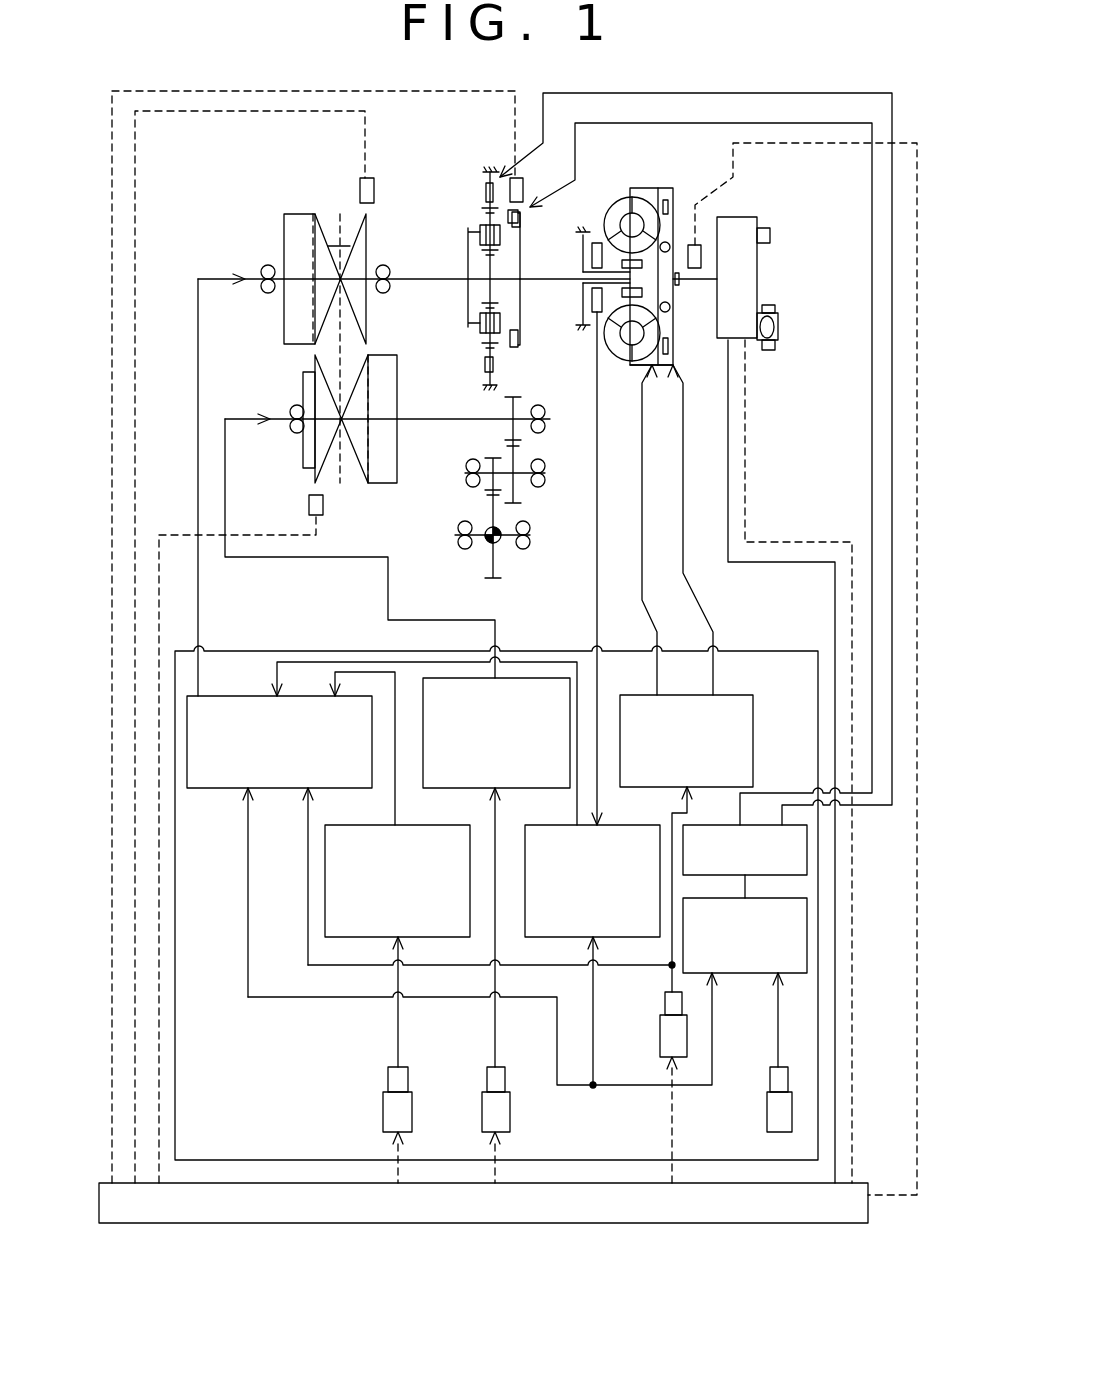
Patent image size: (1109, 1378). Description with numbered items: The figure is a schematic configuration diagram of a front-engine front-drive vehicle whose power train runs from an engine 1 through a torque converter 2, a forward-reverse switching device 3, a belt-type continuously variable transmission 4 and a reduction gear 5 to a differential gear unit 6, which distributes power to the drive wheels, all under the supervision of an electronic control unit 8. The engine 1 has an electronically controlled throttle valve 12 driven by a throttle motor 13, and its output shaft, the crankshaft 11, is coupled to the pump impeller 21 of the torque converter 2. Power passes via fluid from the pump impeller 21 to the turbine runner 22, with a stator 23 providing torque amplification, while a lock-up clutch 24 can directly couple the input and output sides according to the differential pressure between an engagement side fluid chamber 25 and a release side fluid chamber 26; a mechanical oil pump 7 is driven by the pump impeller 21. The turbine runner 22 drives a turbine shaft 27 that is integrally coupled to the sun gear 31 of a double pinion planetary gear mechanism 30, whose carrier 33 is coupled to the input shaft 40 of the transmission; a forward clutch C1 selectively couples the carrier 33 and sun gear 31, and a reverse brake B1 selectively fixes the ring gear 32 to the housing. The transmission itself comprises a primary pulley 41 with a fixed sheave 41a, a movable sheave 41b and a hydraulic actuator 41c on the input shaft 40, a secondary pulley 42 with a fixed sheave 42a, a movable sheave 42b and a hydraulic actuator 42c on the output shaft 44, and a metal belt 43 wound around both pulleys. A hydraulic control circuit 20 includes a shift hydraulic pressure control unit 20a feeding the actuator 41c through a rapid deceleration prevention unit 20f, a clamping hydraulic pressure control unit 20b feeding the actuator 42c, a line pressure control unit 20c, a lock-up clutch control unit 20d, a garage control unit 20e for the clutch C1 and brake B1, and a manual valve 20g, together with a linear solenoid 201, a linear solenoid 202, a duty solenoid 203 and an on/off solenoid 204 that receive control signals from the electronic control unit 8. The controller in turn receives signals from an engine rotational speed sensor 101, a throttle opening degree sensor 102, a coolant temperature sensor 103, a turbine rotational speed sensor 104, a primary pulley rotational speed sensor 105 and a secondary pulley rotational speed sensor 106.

The engine 1 is at (752, 215).
The torque converter 2 is at (633, 195).
The forward-reverse switching device 3 is at (492, 168).
The belt-type continuously variable transmission 4 is at (330, 190).
The reduction gear 5 is at (540, 455).
The differential gear unit 6 is at (488, 545).
The mechanical oil pump 7 is at (592, 300).
The electronic control unit 8 is at (700, 1223).
The crankshaft 11 is at (695, 280).
The throttle valve 12 is at (778, 327).
The throttle motor 13 is at (773, 313).
The hydraulic control circuit 20 is at (582, 651).
The shift hydraulic pressure control unit 20a is at (415, 825).
The clamping hydraulic pressure control unit 20b is at (522, 678).
The line pressure control unit 20c is at (620, 825).
The lock-up clutch control unit 20d is at (733, 695).
The garage control unit 20e is at (750, 973).
The rapid deceleration prevention unit 20f is at (228, 696).
The manual valve 20g is at (760, 825).
The pump impeller 21 is at (633, 365).
The turbine runner 22 is at (660, 365).
The stator 23 is at (620, 345).
The lock-up clutch 24 is at (675, 365).
The engagement side fluid chamber 25 is at (645, 380).
The release side fluid chamber 26 is at (670, 340).
The turbine shaft 27 is at (560, 274).
The planetary gear mechanism 30 is at (458, 305).
The sun gear 31 is at (485, 252).
The ring gear 32 is at (484, 210).
The carrier 33 is at (480, 232).
The input shaft 40 is at (447, 292).
The primary pulley 41 is at (272, 222).
The fixed sheave 41a is at (360, 250).
The movable sheave 41b is at (300, 310).
The hydraulic actuator 41c is at (284, 248).
The secondary pulley 42 is at (300, 460).
The fixed sheave 42a is at (303, 450).
The movable sheave 42b is at (370, 460).
The hydraulic actuator 42c is at (397, 450).
The metal belt 43 is at (350, 246).
The output shaft 44 is at (445, 420).
The engine rotational speed sensor 101 is at (695, 245).
The throttle opening degree sensor 102 is at (770, 350).
The coolant temperature sensor 103 is at (770, 235).
The turbine rotational speed sensor 104 is at (527, 207).
The primary pulley rotational speed sensor 105 is at (398, 168).
The secondary pulley rotational speed sensor 106 is at (323, 505).
The linear solenoid SLP 201 is at (383, 1110).
The linear solenoid SLS 202 is at (510, 1110).
The duty solenoid DSU 203 is at (660, 1035).
The on/off solenoid SL1 204 is at (767, 1110).
The reverse brake B1 is at (486, 190).
The forward clutch C1 is at (576, 242).